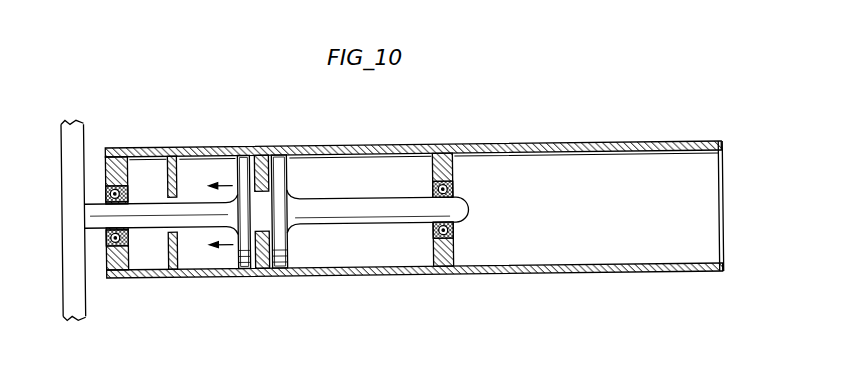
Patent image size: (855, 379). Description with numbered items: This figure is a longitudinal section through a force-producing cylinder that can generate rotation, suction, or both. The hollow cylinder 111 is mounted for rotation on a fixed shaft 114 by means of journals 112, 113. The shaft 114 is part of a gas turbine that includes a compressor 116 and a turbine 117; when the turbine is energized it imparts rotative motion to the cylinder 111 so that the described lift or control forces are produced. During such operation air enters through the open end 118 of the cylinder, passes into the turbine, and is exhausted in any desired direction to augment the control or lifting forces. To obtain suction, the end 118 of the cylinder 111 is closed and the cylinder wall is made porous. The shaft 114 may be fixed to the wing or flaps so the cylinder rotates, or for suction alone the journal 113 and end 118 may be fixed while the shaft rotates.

The hollow cylinder 111 is at (595, 149).
The journal 112 is at (454, 185).
The journal 113 is at (128, 190).
The fixed shaft 114 is at (352, 207).
The compressor 116 is at (260, 176).
The turbine 117 is at (177, 191).
The open end 118 is at (723, 242).